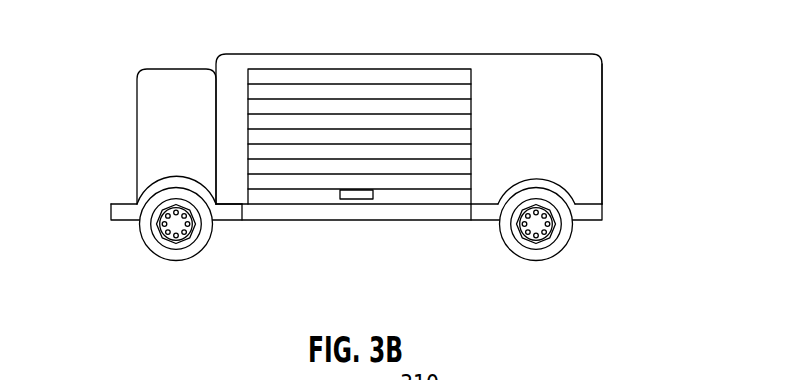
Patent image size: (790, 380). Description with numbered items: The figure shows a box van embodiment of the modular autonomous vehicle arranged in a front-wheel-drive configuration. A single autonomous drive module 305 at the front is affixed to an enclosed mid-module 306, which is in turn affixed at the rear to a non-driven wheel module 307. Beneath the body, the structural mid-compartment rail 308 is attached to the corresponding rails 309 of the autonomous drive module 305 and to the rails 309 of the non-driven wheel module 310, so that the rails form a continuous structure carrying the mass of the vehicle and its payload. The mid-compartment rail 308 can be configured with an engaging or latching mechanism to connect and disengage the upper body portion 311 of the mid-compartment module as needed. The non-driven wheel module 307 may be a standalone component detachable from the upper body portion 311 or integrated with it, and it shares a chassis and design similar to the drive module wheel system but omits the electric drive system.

The autonomous drive module 305 is at (151, 125).
The enclosed mid-module 306 is at (455, 72).
The non-driven wheel module 307 is at (537, 238).
The mid-compartment rail 308 is at (406, 212).
The rails 309 is at (225, 212).
The non-driven wheel module 310 is at (584, 137).
The upper body portion 311 is at (585, 63).